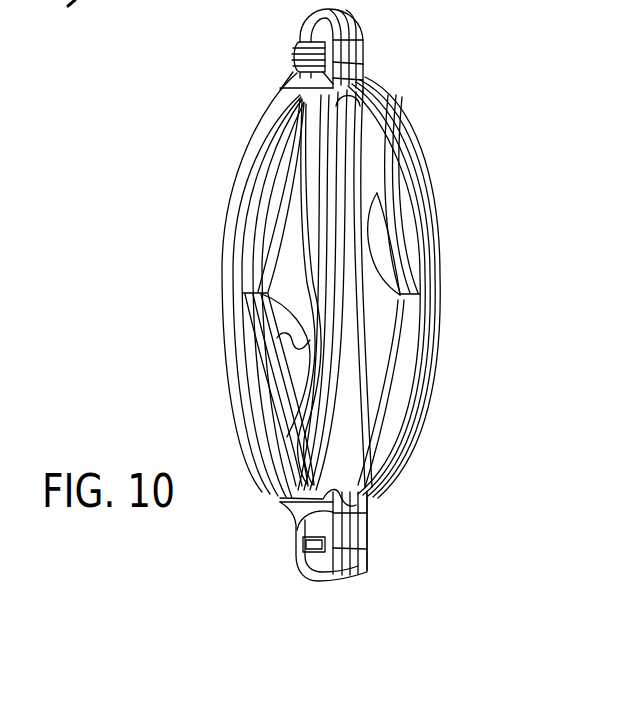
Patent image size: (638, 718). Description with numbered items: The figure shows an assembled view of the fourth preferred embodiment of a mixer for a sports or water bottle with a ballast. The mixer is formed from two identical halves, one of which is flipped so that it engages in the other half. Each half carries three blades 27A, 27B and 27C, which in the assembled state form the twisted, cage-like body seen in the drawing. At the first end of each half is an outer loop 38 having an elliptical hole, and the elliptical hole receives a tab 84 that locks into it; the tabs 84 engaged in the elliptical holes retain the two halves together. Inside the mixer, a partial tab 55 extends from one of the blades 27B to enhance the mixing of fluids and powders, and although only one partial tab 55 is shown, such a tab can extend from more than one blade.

The tab 84 is at (295, 50).
The blade 27C is at (333, 123).
The blade 27B is at (222, 269).
The blade 27A is at (433, 380).
The partial tab 55 is at (287, 340).
The outer loop 38 is at (303, 568).